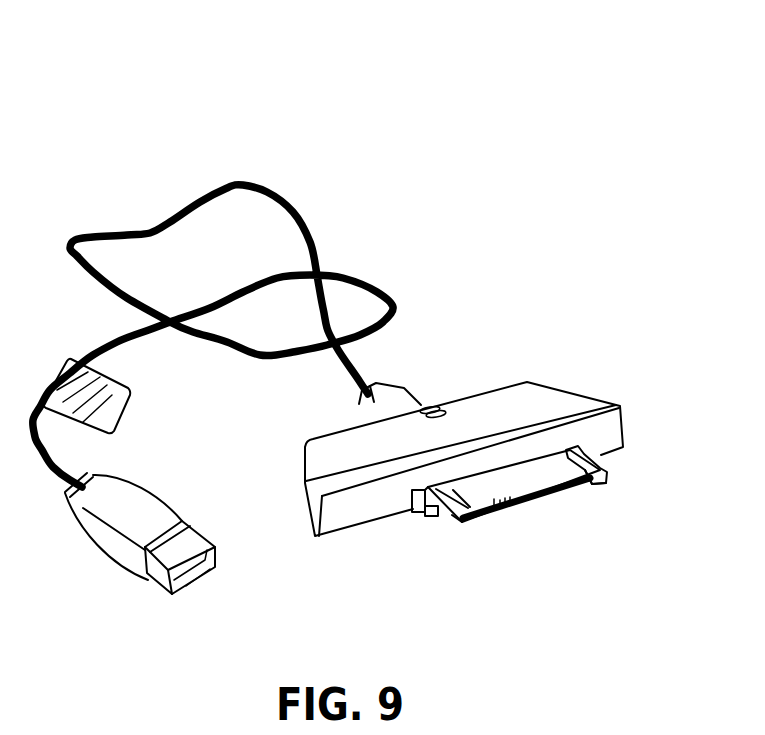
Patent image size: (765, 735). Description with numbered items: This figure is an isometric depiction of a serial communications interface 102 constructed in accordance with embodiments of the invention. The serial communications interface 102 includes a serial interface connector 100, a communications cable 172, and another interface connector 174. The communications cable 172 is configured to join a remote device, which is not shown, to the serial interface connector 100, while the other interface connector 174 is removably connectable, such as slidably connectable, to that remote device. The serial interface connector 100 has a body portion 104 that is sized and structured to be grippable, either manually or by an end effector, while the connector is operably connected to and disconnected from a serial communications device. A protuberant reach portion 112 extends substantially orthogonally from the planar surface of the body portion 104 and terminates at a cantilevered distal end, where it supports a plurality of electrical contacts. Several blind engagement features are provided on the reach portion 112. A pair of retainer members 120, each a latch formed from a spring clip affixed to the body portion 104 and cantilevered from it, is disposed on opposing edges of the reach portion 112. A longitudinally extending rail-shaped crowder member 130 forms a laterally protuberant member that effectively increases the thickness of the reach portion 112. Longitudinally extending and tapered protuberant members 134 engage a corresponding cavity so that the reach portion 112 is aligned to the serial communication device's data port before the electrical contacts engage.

The serial interface connector 100 is at (562, 356).
The serial communications interface 102 is at (134, 104).
The body portion 104 is at (501, 383).
The reach portion 112 is at (512, 480).
The retainer member 120 is at (420, 512).
The crowder member 130 is at (473, 520).
The protuberant member 134 is at (453, 522).
The communications cable 172 is at (278, 193).
The interface connector 174 is at (163, 597).